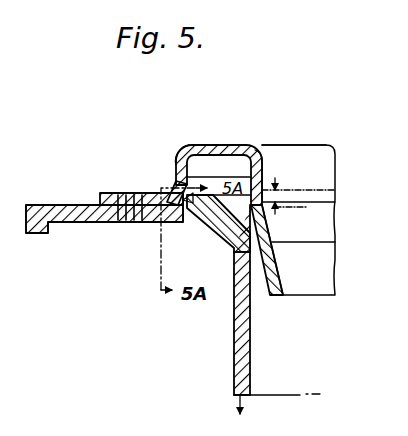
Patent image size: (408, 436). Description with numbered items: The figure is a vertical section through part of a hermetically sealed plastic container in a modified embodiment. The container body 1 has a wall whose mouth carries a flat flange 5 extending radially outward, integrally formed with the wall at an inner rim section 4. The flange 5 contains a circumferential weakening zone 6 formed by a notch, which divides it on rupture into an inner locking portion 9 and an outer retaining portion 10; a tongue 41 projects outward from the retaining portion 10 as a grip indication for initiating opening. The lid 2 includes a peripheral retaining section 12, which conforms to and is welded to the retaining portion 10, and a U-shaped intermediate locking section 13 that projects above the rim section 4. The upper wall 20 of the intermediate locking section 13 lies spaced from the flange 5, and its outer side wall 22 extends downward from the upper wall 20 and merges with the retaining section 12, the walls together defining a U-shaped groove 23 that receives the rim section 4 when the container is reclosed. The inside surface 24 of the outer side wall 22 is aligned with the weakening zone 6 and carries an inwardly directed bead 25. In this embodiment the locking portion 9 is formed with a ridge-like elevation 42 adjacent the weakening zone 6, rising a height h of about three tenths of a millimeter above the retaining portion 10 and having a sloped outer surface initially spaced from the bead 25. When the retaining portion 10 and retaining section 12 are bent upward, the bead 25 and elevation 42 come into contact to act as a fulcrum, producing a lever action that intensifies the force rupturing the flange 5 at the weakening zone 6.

The container body 1 is at (233, 312).
The lid 2 is at (322, 147).
The rim section 4 is at (280, 210).
The flange 5 is at (104, 223).
The weakening zone 6 is at (180, 224).
The locking portion 9 is at (192, 228).
The retaining portion 10 is at (132, 227).
The peripheral retaining section 12 is at (112, 195).
The intermediate locking section 13 is at (195, 145).
The upper wall 20 is at (222, 146).
The outer side wall 22 is at (168, 186).
The U-shaped groove 23 is at (283, 163).
The inside surface 24 is at (178, 150).
The bead 25 is at (188, 199).
The tongue 41 is at (60, 224).
The elevation 42 is at (253, 152).
The height h is at (282, 196).